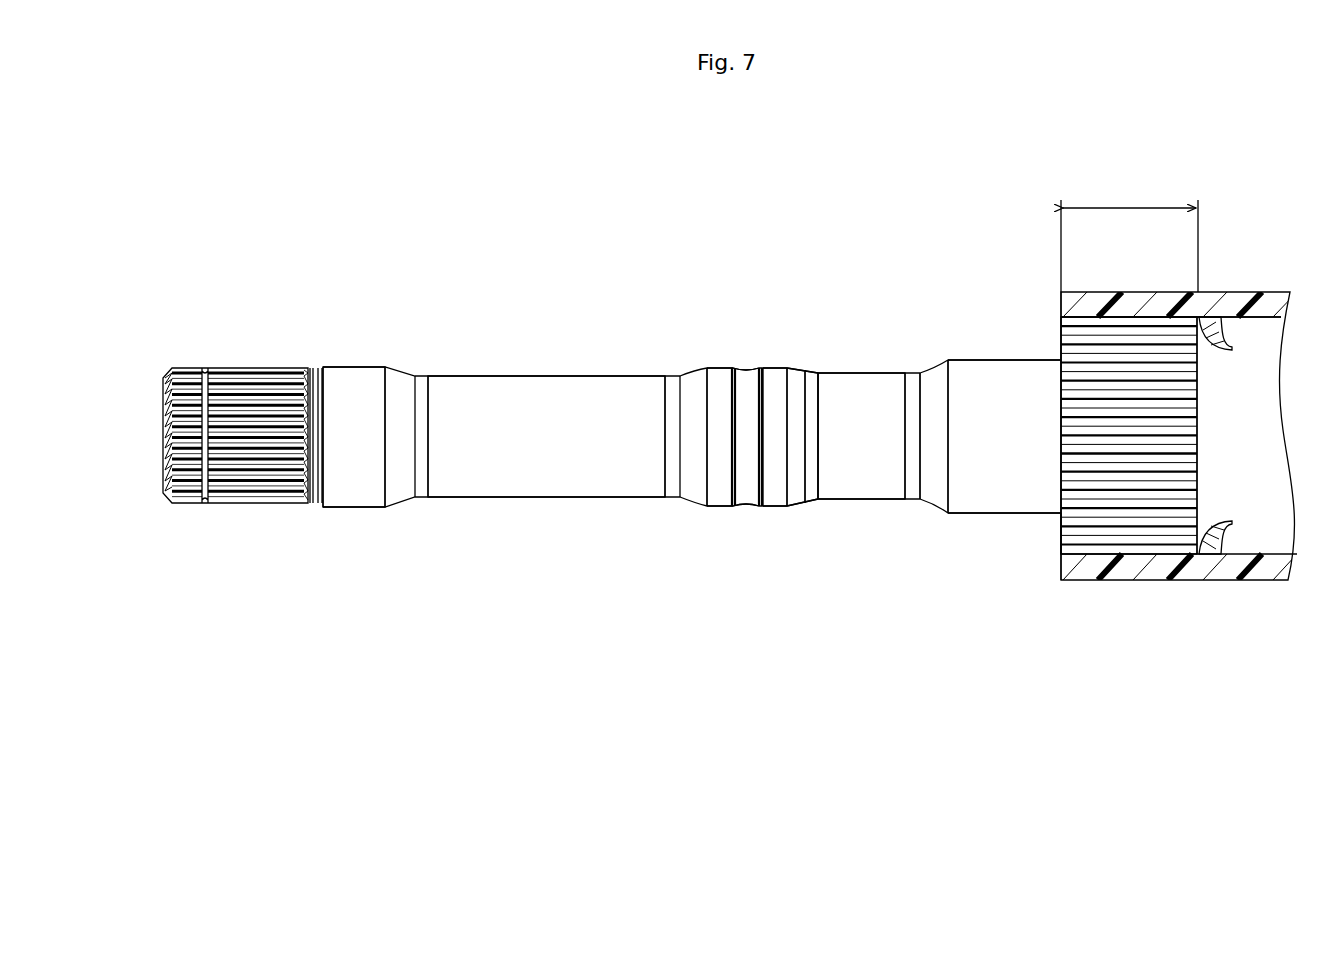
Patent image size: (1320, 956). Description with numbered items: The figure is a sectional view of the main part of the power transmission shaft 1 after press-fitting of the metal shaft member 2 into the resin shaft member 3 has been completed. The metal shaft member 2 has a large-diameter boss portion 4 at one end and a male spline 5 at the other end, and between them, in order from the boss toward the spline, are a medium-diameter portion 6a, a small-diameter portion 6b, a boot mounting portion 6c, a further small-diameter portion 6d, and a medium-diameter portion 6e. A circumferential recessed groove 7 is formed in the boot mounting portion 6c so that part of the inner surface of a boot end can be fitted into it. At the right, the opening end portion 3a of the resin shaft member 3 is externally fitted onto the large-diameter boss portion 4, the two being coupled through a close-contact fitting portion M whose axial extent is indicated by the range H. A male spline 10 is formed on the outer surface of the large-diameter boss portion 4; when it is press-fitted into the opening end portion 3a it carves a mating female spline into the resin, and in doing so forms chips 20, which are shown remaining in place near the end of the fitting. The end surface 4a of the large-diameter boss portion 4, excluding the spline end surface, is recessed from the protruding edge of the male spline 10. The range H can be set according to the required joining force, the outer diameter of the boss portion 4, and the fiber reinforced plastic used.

The power transmission shaft 1 is at (922, 247).
The metal shaft member 2 is at (530, 378).
The resin shaft member 3 is at (1179, 580).
The opening end portion 3a is at (1080, 318).
The large-diameter boss portion 4 is at (1137, 530).
The end surface 4a is at (1197, 484).
The male spline 5 is at (258, 380).
The medium-diameter portion 6a is at (1000, 490).
The small-diameter portion 6b is at (866, 395).
The boot mounting portion 6c is at (776, 380).
The small-diameter portion 6d is at (540, 470).
The medium-diameter portion 6e is at (350, 490).
The circumferential recessed groove 7 is at (746, 485).
The male spline 10 is at (1160, 456).
The chips 20 is at (1206, 335).
The close-contact fitting portion M is at (1058, 553).
The range H is at (1129, 237).